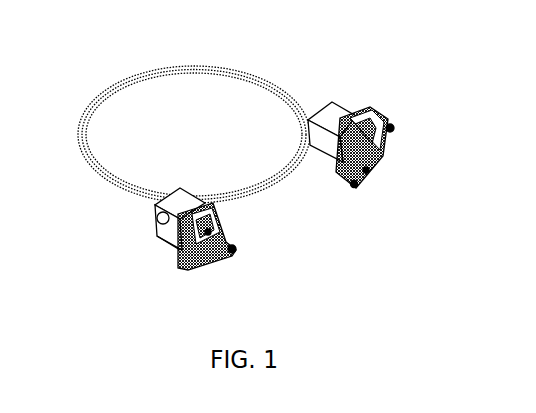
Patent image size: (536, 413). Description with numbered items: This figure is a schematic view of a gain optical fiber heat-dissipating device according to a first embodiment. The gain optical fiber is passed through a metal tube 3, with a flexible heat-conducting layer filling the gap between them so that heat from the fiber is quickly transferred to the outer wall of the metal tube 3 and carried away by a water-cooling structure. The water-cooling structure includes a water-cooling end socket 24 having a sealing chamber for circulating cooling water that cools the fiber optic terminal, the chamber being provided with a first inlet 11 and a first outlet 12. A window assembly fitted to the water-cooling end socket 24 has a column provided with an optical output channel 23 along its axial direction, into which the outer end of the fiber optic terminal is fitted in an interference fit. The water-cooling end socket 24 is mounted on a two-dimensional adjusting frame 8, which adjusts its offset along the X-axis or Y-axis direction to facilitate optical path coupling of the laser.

The metal tube 3 is at (128, 80).
The two-dimensional adjusting frame 8 is at (173, 258).
The first inlet 11 is at (170, 237).
The first outlet 12 is at (155, 207).
The water-cooling end socket 24 is at (347, 108).
The optical output channel 23 is at (380, 152).